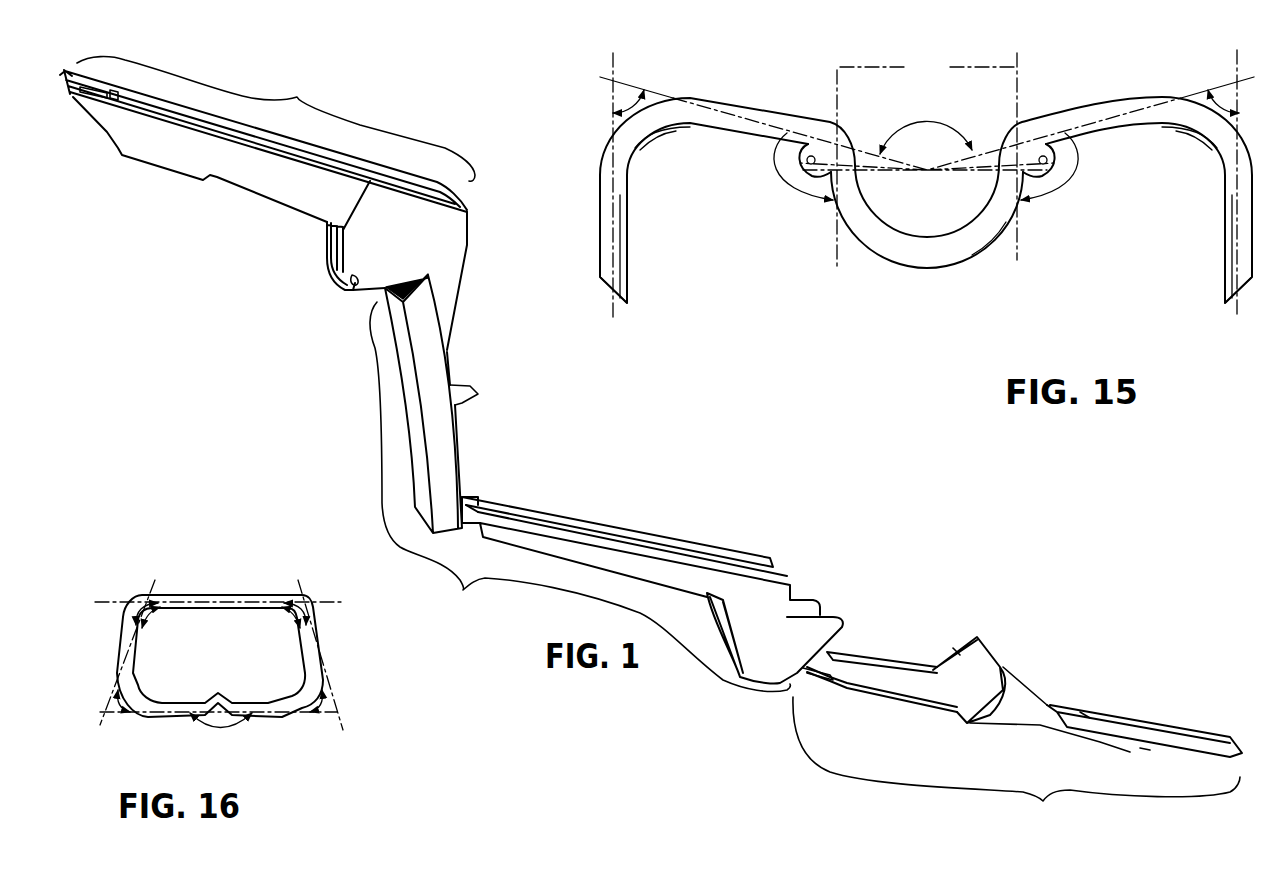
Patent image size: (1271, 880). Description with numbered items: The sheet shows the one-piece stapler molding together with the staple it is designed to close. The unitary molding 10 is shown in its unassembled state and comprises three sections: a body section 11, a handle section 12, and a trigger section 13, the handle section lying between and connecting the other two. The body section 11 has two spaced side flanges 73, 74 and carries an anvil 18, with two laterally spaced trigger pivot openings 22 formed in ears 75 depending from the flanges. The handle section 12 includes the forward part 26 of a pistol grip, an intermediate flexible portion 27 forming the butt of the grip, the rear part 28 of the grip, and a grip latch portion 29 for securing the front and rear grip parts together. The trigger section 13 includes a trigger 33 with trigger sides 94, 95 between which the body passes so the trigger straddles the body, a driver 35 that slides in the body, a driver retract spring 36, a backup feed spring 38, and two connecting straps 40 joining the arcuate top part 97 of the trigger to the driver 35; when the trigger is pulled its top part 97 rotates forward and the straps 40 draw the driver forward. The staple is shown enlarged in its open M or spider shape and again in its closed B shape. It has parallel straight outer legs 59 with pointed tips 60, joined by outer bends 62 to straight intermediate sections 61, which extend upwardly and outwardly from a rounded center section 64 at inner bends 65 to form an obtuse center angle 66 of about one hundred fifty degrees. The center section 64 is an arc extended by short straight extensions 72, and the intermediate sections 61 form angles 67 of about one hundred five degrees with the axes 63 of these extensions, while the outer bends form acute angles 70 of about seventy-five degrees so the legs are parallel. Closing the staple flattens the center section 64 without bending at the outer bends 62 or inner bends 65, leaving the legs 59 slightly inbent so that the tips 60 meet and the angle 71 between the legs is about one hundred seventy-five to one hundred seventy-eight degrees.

In FIG. 1, the unitary molding 10 is at (682, 447).
In FIG. 1, the body section 11 is at (303, 83).
In FIG. 1, the handle section 12 is at (462, 593).
In FIG. 1, the trigger section 13 is at (1040, 802).
In FIG. 1, the anvil 18 is at (98, 70).
In FIG. 1, the trigger pivot openings 22 is at (357, 283).
In FIG. 1, the forward part of pistol grip 26 is at (443, 460).
In FIG. 1, the intermediate flexible portion 27 is at (470, 531).
In FIG. 1, the rear part of grip 28 is at (614, 570).
In FIG. 1, the grip latch portion 29 is at (470, 392).
In FIG. 1, the trigger 33 is at (1143, 750).
In FIG. 1, the driver 35 is at (1087, 717).
In FIG. 1, the driver retract spring 36 is at (820, 680).
In FIG. 1, the backup feed spring 38 is at (983, 668).
In FIG. 1, the connecting straps 40 is at (880, 650).
In FIG. 15, the outer legs 59 is at (606, 256).
In FIG. 16, the outer legs 59 is at (183, 722).
In FIG. 15, the tips 60 is at (627, 303).
In FIG. 16, the tips 60 is at (226, 702).
In FIG. 15, the intermediate sections 61 is at (776, 111).
In FIG. 16, the intermediate sections 61 is at (118, 640).
In FIG. 15, the outer bends 62 is at (665, 128).
In FIG. 16, the outer bends 62 is at (142, 688).
In FIG. 15, the axes of extensions 63 is at (954, 66).
In FIG. 15, the center section 64 is at (921, 266).
In FIG. 16, the center section 64 is at (226, 594).
In FIG. 15, the inner bends 65 is at (877, 149).
In FIG. 16, the inner bends 65 is at (140, 610).
In FIG. 15, the obtuse center angle 66 is at (927, 119).
In FIG. 15, the inner bend angles 67 is at (939, 180).
In FIG. 16, the inner bend angles 67 is at (288, 612).
In FIG. 15, the outer bend angles 70 is at (628, 108).
In FIG. 16, the outer bend angles 70 is at (110, 705).
In FIG. 16, the angle between legs 71 is at (222, 735).
In FIG. 15, the straight extensions 72 is at (814, 152).
In FIG. 1, the side flange 73 is at (258, 121).
In FIG. 1, the side flange 74 is at (267, 152).
In FIG. 1, the ears 75 is at (327, 262).
In FIG. 1, the trigger side 94 is at (1163, 723).
In FIG. 1, the trigger side 95 is at (1097, 740).
In FIG. 1, the top part of trigger 97 is at (953, 648).